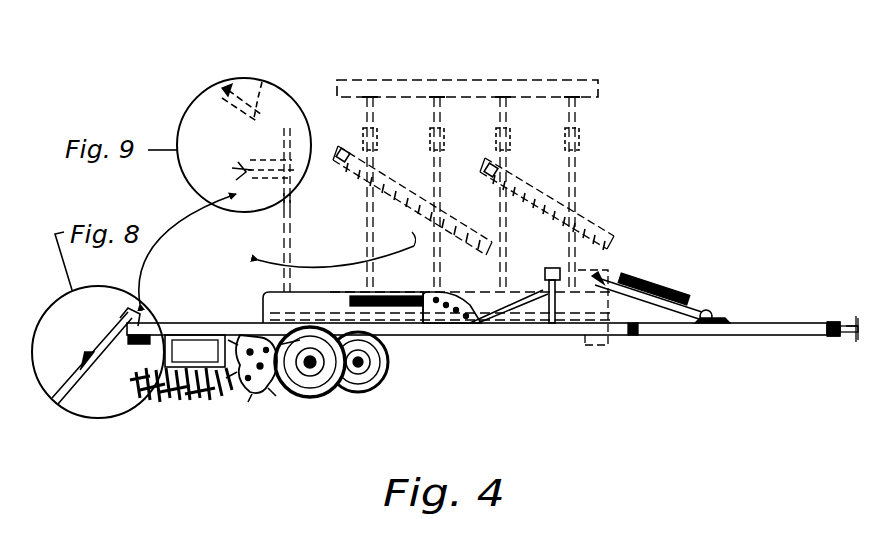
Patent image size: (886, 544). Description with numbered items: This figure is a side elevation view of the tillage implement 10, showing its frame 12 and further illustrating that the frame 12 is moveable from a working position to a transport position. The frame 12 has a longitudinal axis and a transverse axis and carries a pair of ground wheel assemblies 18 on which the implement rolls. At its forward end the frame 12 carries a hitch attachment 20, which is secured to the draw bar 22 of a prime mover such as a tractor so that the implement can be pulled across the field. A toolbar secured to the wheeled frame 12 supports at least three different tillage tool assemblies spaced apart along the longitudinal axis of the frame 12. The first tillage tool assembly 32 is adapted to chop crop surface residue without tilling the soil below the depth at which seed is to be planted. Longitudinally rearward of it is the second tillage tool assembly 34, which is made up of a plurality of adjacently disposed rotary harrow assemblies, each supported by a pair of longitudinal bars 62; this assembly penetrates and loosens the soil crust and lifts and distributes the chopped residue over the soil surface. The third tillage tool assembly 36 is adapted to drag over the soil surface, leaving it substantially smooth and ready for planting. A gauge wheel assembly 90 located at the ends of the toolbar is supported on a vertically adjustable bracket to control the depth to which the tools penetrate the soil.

The tillage implement 10 is at (730, 176).
The frame 12 is at (558, 340).
The ground wheel assemblies 18 is at (400, 362).
The hitch attachment 20 is at (836, 324).
The draw bar 22 is at (858, 337).
The first tillage tool assembly 32 is at (262, 402).
The second tillage tool assembly 34 is at (200, 402).
The third tillage tool assembly 36 is at (272, 70).
The longitudinal bars 62 is at (292, 232).
The gauge wheel assembly 90 is at (313, 396).